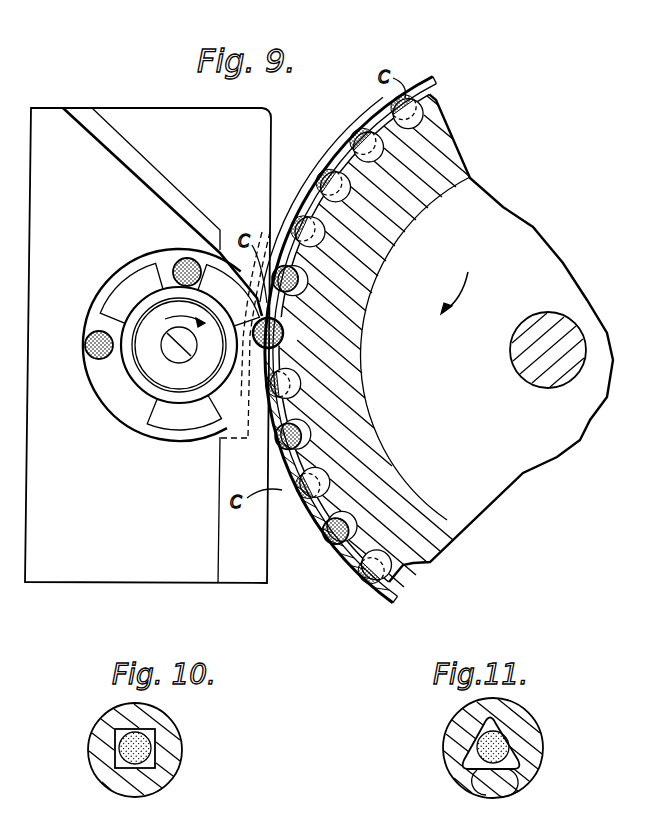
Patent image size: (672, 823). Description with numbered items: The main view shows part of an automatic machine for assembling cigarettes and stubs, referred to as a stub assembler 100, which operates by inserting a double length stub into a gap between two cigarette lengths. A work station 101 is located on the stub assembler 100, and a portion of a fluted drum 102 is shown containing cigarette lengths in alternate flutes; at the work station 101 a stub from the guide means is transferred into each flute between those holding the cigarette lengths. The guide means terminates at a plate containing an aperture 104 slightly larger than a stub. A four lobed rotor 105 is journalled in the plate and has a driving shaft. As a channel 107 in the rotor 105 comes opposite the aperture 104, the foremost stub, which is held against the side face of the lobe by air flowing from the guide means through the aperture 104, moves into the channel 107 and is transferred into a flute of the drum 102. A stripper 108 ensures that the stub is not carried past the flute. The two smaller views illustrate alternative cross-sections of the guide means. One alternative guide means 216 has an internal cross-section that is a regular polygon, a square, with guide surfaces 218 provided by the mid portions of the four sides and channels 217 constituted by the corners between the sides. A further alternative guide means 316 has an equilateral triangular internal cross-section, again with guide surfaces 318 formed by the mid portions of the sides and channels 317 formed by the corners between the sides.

In FIG. 9, the stub assembler 100 is at (312, 536).
In FIG. 9, the work station 101 is at (287, 337).
In FIG. 9, the fluted drum 102 is at (440, 163).
In FIG. 9, the aperture 104 is at (85, 358).
In FIG. 9, the four lobed rotor 105 is at (120, 398).
In FIG. 9, the channel 107 is at (172, 422).
In FIG. 9, the stripper 108 is at (245, 356).
In FIG. 10, the guide means 216 is at (160, 723).
In FIG. 10, the channels 217 is at (155, 767).
In FIG. 10, the guide surfaces 218 is at (119, 747).
In FIG. 11, the guide means 316 is at (512, 767).
In FIG. 11, the channels 317 is at (503, 720).
In FIG. 11, the guide surfaces 318 is at (508, 740).